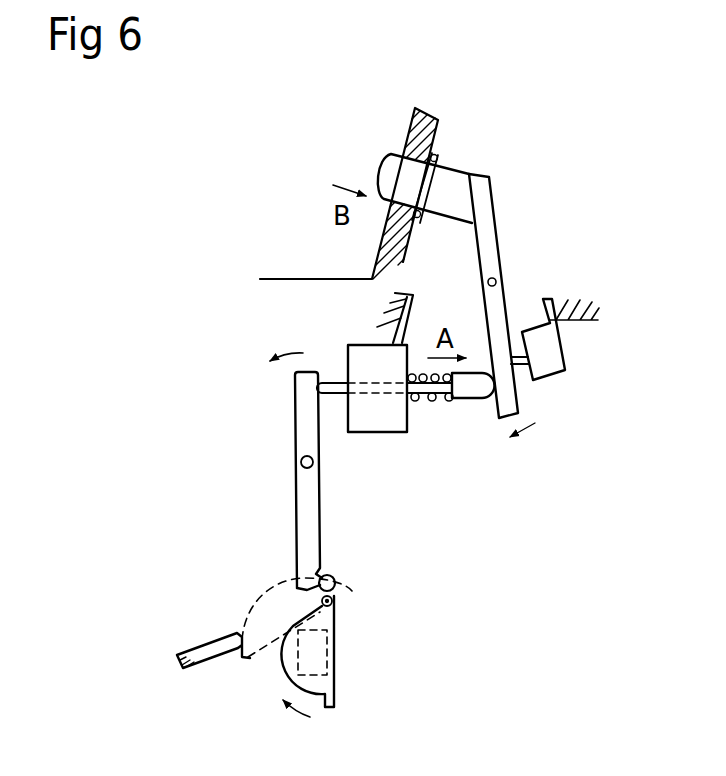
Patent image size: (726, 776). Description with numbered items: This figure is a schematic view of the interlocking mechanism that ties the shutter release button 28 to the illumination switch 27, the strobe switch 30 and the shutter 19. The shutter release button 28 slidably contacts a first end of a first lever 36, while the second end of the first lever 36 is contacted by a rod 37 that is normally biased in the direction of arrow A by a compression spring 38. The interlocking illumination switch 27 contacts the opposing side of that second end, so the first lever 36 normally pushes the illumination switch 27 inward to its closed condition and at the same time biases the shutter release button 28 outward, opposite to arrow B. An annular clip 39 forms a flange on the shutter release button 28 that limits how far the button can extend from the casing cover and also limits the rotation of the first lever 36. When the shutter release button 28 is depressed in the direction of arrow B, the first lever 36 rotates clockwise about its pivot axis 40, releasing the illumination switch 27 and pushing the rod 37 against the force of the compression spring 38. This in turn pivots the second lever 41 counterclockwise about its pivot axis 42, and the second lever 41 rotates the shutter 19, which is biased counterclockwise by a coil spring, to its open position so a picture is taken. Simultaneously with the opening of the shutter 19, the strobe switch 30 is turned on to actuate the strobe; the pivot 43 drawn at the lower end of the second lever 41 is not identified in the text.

The shutter 19 is at (327, 683).
The interlocking illumination switch 27 is at (556, 361).
The shutter release button 28 is at (393, 172).
The strobe switch 30 is at (197, 661).
The first lever 36 is at (488, 248).
The rod 37 is at (465, 393).
The compression spring 38 is at (428, 398).
The annular clip 39 is at (434, 157).
The pivot axis 40 is at (497, 281).
The second lever 41 is at (307, 510).
The pivot axis 42 is at (300, 460).
The pivot pin 43 is at (333, 601).